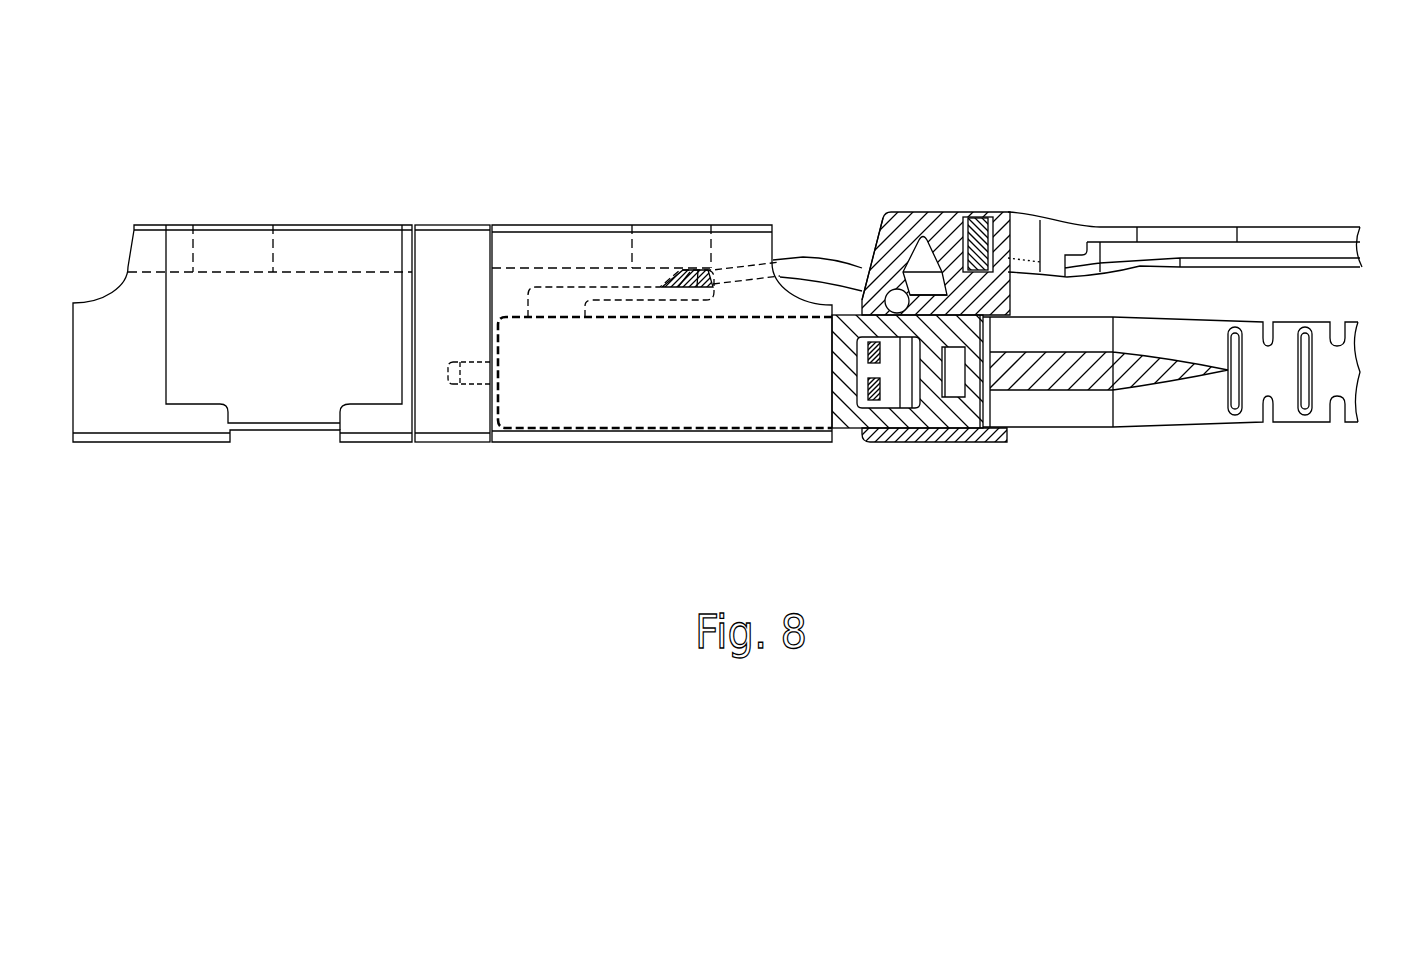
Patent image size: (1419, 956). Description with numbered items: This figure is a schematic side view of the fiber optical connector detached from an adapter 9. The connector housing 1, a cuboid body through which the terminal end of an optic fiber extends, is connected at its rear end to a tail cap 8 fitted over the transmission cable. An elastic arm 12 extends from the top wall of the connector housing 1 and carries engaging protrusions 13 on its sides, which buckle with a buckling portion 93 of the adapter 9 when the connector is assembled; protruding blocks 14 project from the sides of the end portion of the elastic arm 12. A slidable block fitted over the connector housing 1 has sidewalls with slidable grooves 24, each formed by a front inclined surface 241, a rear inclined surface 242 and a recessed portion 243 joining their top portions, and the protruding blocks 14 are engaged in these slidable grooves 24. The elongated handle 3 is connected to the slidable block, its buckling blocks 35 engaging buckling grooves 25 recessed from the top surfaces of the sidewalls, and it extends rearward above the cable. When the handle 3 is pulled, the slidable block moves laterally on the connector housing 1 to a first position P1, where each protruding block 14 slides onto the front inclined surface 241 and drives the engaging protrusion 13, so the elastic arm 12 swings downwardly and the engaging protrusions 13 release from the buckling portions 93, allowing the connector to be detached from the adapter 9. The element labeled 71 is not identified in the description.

The connector housing 1 is at (683, 405).
The handle 3 is at (1198, 222).
The tail cap 8 is at (1267, 378).
The adapter 9 is at (448, 280).
The elastic arm 12 is at (592, 292).
The engaging protrusion 13 is at (695, 270).
The protruding block 14 is at (862, 262).
The slidable groove 24 is at (990, 133).
The front inclined surface 241 is at (893, 292).
The recessed portion 243 is at (931, 236).
The rear inclined surface 242 is at (962, 224).
The buckling block 35 is at (987, 222).
The buckling groove 25 is at (1040, 220).
The fastener 71 is at (475, 380).
The buckling portion 93 is at (712, 258).
The first position P1 is at (896, 300).